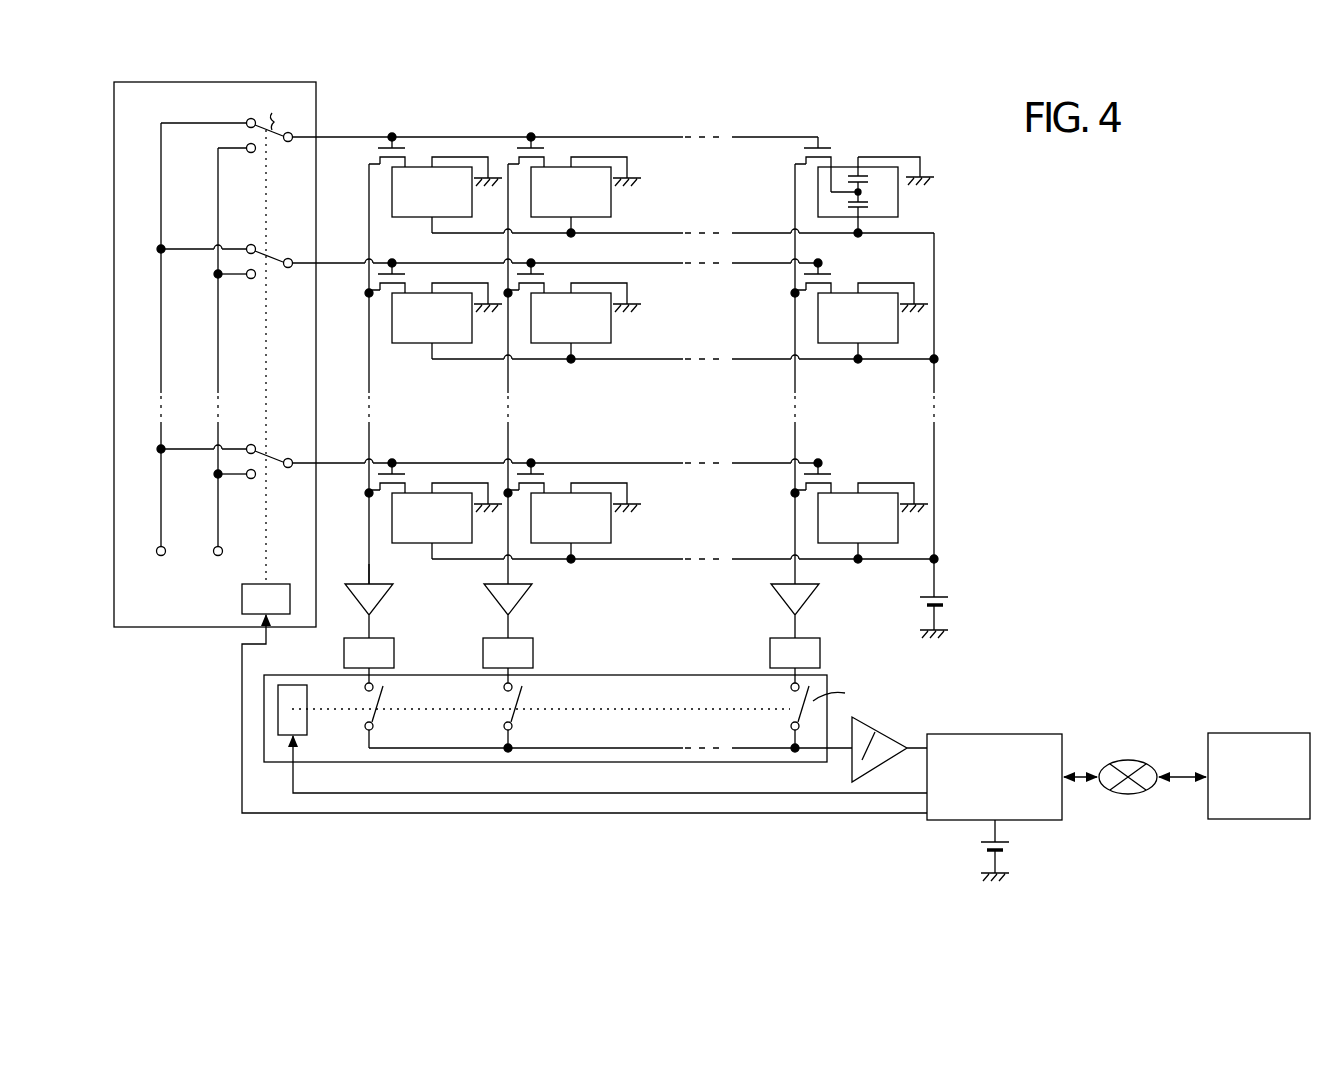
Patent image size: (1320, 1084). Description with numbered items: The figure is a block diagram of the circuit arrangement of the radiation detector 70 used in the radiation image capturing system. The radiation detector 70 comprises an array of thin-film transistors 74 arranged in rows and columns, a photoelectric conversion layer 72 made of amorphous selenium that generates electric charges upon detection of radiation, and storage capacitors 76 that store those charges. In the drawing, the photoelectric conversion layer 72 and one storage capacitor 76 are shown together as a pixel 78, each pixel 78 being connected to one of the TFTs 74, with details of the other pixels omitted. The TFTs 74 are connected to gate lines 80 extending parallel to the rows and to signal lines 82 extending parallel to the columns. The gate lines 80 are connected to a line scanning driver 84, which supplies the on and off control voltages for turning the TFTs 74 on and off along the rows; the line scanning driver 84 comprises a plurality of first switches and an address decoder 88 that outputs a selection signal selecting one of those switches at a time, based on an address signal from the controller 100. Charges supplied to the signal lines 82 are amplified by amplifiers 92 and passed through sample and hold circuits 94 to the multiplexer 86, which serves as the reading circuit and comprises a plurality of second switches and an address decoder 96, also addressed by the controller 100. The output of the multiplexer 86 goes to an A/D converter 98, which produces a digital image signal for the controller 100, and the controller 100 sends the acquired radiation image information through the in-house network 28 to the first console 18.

The first console 18 is at (1290, 733).
The in-house network 28 is at (1128, 760).
The radiation detector 70 is at (620, 358).
The photoelectric conversion layer 72 is at (868, 204).
The thin-film transistor 74 is at (804, 153).
The storage capacitor 76 is at (873, 178).
The pixel 78 is at (842, 165).
The gate line 80 is at (766, 136).
The signal line 82 is at (795, 189).
The line scanning driver 84 is at (192, 354).
The multiplexer 86 is at (578, 696).
The address decoder 88 is at (241, 599).
The amplifier 92 is at (521, 605).
The sample and hold circuit 94 is at (533, 655).
The address decoder 96 is at (307, 722).
The A/D converter 98 is at (888, 736).
The controller 100 is at (1040, 733).